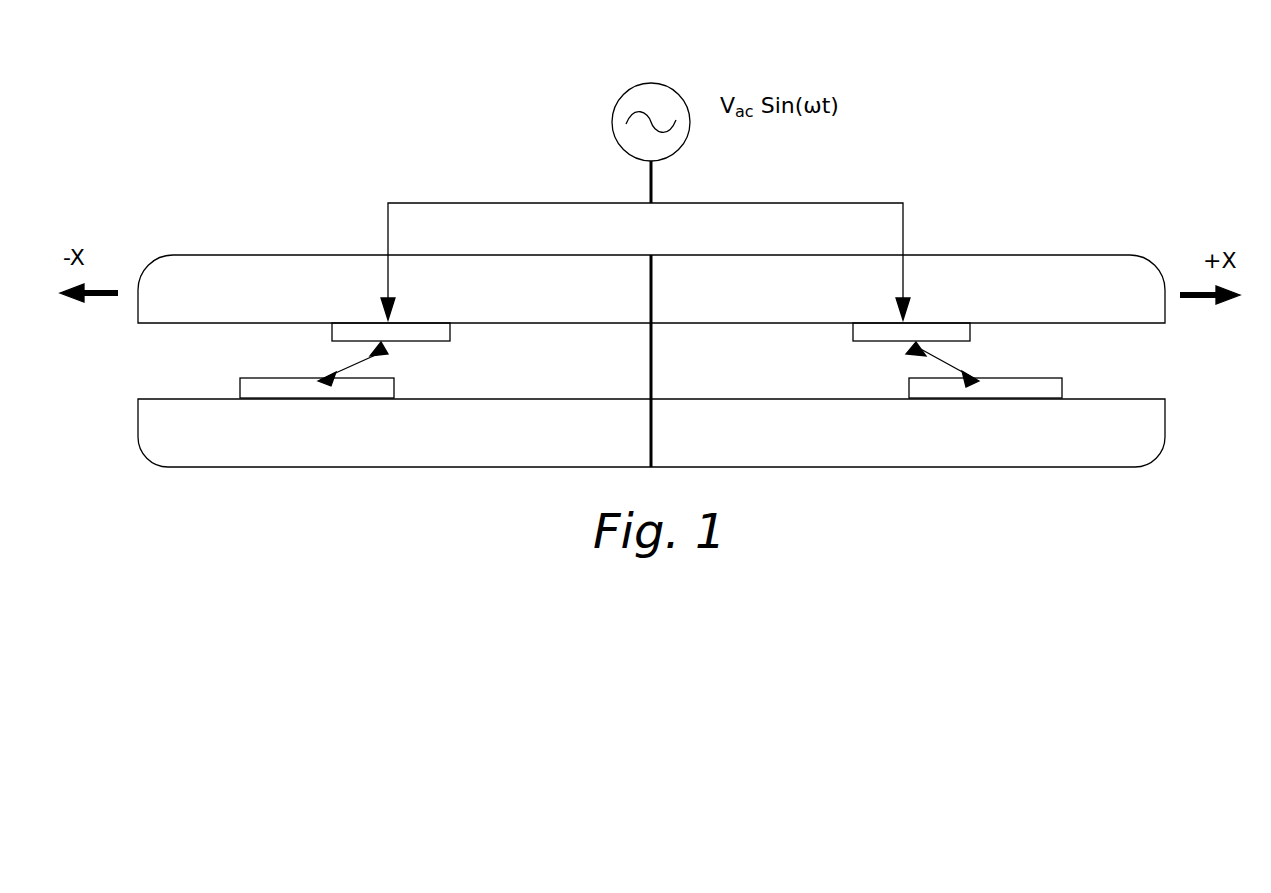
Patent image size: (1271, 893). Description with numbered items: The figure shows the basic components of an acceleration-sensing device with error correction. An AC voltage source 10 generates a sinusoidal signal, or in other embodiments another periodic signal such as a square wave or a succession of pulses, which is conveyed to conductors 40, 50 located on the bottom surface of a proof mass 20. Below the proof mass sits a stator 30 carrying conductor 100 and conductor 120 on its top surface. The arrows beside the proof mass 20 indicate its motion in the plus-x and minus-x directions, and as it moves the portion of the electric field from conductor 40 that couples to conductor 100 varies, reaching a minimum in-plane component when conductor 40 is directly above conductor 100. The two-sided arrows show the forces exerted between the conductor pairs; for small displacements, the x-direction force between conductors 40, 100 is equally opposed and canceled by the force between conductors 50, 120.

The AC voltage source 10 is at (616, 103).
The proof mass 20 is at (207, 270).
The stator 30 is at (150, 420).
The conductor 40 is at (388, 233).
The conductor 50 is at (952, 330).
The conductor 100 is at (355, 389).
The conductor 120 is at (943, 395).